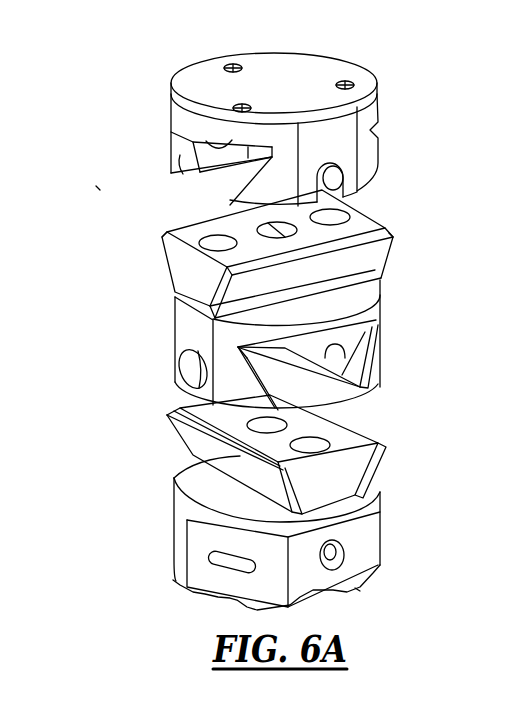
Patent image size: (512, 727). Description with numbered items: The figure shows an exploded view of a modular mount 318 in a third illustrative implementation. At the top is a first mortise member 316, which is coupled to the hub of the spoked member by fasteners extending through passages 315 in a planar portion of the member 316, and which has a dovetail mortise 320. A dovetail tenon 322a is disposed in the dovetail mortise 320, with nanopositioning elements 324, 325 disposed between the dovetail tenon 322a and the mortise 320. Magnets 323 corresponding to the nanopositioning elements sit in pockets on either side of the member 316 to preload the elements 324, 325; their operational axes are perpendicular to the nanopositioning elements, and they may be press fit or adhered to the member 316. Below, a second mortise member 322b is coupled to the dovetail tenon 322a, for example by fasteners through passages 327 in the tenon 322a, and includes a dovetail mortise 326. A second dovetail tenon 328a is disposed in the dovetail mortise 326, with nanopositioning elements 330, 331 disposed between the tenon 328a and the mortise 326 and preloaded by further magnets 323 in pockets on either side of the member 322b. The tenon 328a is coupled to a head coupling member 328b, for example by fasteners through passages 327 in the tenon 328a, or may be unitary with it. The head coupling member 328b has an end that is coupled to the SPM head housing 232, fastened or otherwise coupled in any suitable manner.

The passages 315 is at (242, 104).
The first mortise member 316 is at (408, 88).
The modular mount 318 is at (97, 188).
The dovetail mortise 320 is at (242, 185).
The magnets 323 is at (330, 175).
The nanopositioning element 324 is at (200, 142).
The nanopositioning element 325 is at (394, 248).
The passages 327 is at (347, 223).
The dovetail tenon 322a is at (193, 273).
The second mortise member 322b is at (190, 333).
The nanopositioning element 330 is at (338, 350).
The dovetail mortise 326 is at (360, 388).
The nanopositioning element 331 is at (262, 472).
The dovetail tenon 328a is at (337, 490).
The head coupling member 328b is at (347, 527).
The SPM head housing 232 is at (362, 591).